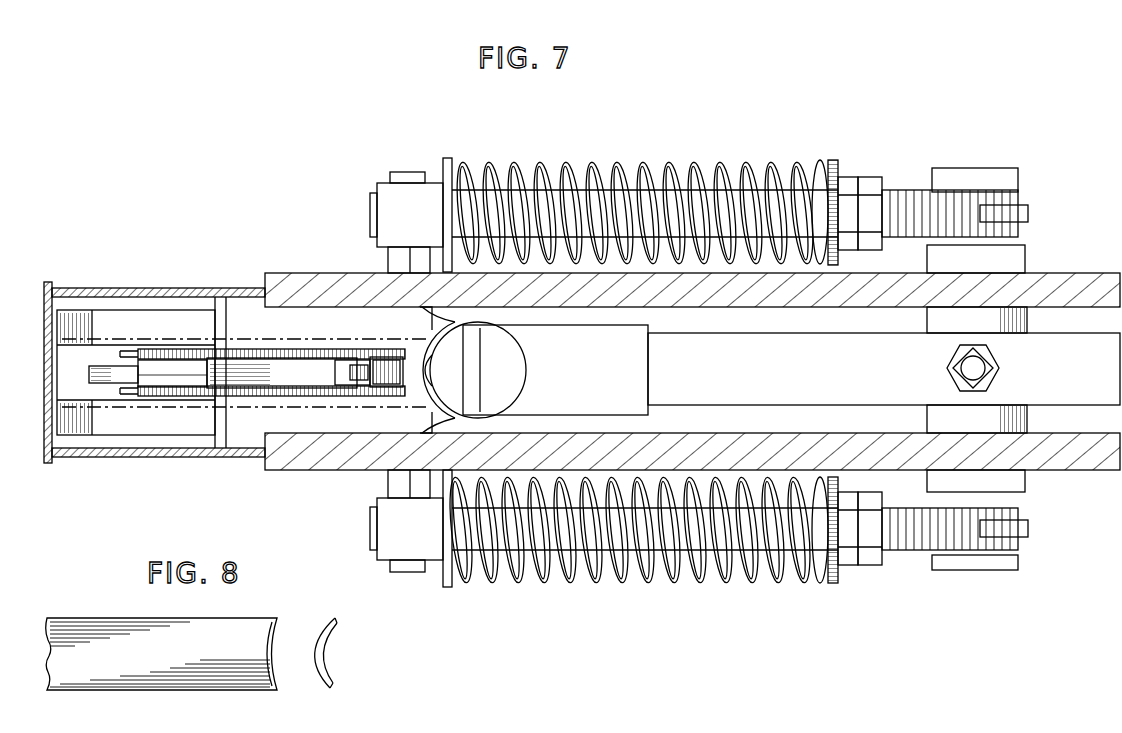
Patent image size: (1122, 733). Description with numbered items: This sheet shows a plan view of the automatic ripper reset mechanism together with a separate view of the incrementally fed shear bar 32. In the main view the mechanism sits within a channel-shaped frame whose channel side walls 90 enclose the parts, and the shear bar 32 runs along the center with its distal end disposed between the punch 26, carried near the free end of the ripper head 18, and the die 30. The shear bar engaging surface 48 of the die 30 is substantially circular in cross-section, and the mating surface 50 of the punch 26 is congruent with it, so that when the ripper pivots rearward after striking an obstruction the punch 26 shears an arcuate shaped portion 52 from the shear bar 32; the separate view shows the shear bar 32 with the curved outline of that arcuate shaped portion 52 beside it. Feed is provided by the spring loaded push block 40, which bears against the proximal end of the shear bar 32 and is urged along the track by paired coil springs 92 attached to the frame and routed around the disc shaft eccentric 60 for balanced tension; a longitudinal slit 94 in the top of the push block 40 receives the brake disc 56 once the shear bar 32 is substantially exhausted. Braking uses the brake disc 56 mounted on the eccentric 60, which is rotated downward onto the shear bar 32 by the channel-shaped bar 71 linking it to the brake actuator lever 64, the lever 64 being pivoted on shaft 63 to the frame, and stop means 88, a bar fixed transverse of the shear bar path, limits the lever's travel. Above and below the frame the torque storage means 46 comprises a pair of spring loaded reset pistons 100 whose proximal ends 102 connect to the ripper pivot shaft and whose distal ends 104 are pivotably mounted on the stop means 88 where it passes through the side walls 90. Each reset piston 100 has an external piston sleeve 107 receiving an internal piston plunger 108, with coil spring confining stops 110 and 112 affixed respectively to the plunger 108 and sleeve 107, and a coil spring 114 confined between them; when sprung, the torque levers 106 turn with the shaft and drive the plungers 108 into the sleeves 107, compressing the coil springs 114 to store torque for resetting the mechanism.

In FIG. 7, the ripper head 18 is at (853, 372).
In FIG. 7, the punch 26 is at (487, 367).
In FIG. 7, the die 30 is at (447, 330).
In FIG. 7, the shear bar 32 is at (174, 368).
In FIG. 8, the shear bar 32 is at (159, 659).
In FIG. 7, the push block 40 is at (72, 392).
In FIG. 7, the torque storage means 46 is at (709, 370).
In FIG. 7, the shear bar engaging surface 48 is at (436, 425).
In FIG. 7, the mating surface 50 is at (490, 322).
In FIG. 8, the arcuate shaped portion 52 is at (325, 648).
In FIG. 7, the brake disc 56 is at (332, 347).
In FIG. 7, the eccentric 60 is at (383, 347).
In FIG. 7, the shaft 63 is at (220, 440).
In FIG. 7, the brake actuator lever 64 is at (267, 373).
In FIG. 7, the channel-shaped bar 71 is at (289, 356).
In FIG. 7, the stop means 88 is at (398, 257).
In FIG. 7, the channel side walls 90 is at (278, 285).
In FIG. 7, the coil springs 92 is at (150, 393).
In FIG. 7, the longitudinal slit 94 is at (110, 377).
In FIG. 7, the reset pistons 100 is at (637, 376).
In FIG. 7, the proximal ends 102 is at (986, 376).
In FIG. 7, the distal ends 104 is at (389, 197).
In FIG. 7, the torque levers 106 is at (1003, 210).
In FIG. 7, the piston sleeves 107 is at (472, 190).
In FIG. 7, the piston plungers 108 is at (815, 173).
In FIG. 7, the coil spring confining stop 110 is at (832, 166).
In FIG. 7, the coil spring confining stop 112 is at (446, 172).
In FIG. 7, the coil springs 114 is at (715, 168).